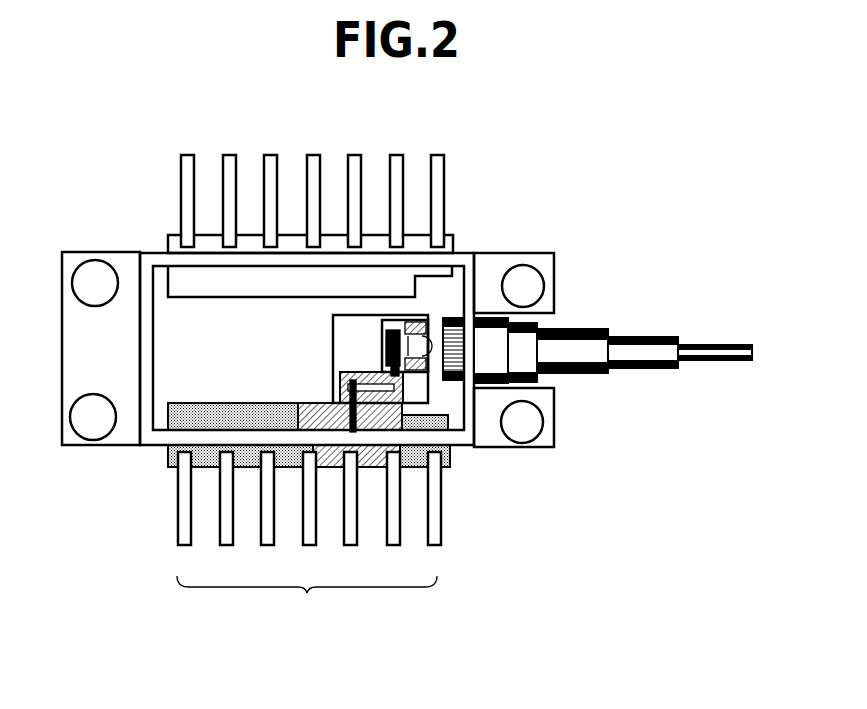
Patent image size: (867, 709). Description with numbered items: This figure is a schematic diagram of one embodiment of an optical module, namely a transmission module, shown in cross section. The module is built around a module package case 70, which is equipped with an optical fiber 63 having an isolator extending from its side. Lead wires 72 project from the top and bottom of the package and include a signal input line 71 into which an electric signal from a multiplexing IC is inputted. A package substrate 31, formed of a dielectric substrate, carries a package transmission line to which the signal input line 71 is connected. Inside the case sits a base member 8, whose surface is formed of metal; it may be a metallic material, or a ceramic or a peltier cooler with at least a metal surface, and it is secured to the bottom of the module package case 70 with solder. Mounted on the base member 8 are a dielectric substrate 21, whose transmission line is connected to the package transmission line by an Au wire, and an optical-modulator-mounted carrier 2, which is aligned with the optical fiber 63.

The optical-modulator-mounted carrier 2 is at (412, 324).
The base member 8 is at (332, 335).
The dielectric substrate 21 is at (340, 385).
The package substrate 31 is at (327, 468).
The optical fiber 63 is at (722, 345).
The module package case 70 is at (463, 442).
The signal input line 71 is at (355, 488).
The lead wires 72 is at (307, 601).